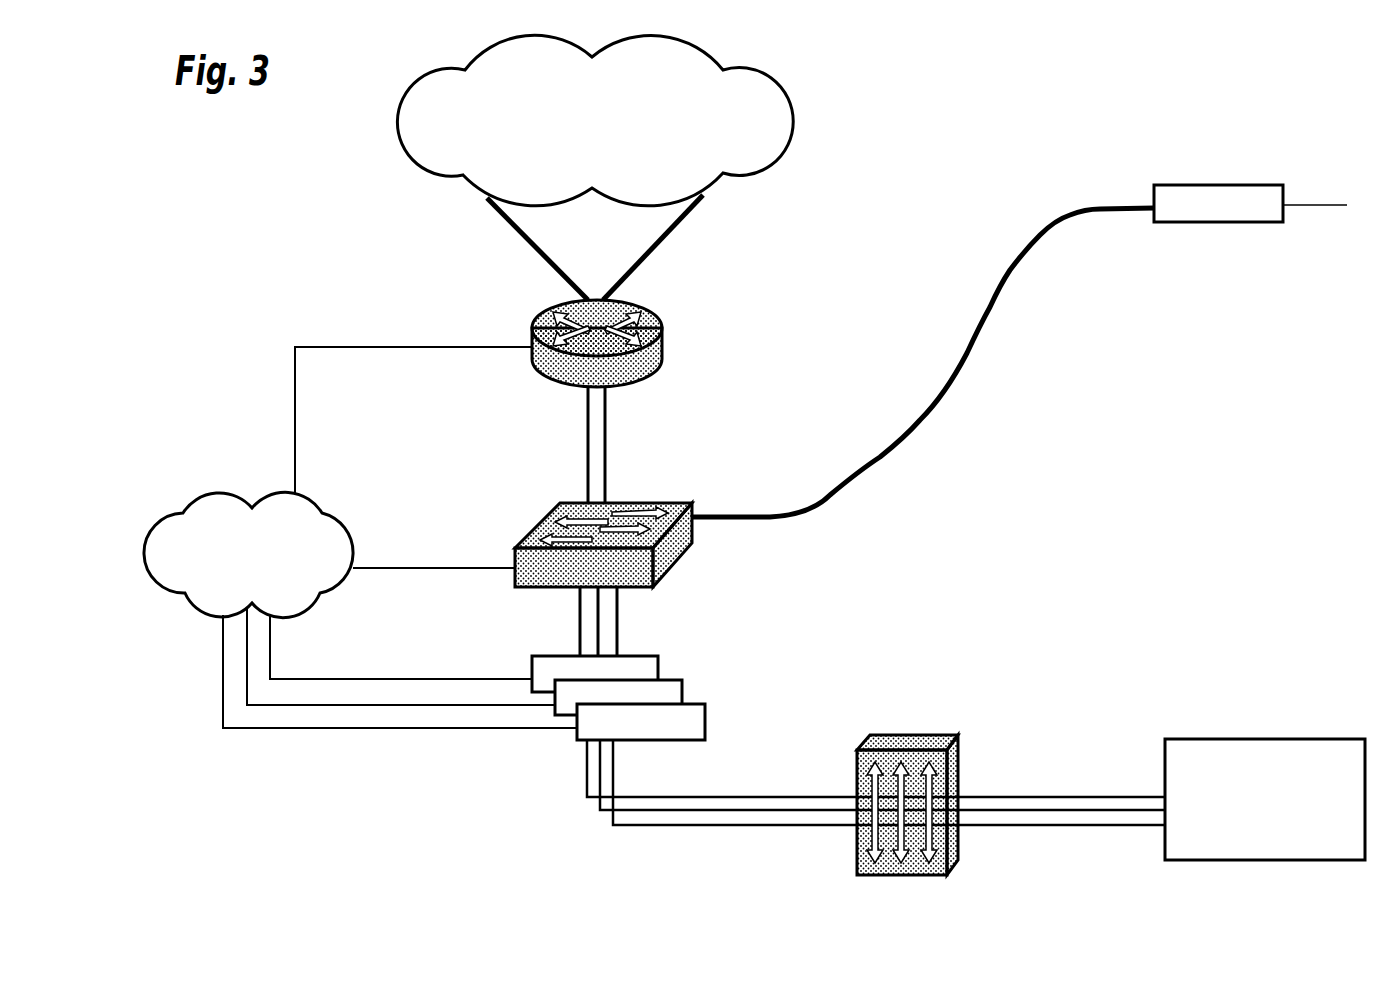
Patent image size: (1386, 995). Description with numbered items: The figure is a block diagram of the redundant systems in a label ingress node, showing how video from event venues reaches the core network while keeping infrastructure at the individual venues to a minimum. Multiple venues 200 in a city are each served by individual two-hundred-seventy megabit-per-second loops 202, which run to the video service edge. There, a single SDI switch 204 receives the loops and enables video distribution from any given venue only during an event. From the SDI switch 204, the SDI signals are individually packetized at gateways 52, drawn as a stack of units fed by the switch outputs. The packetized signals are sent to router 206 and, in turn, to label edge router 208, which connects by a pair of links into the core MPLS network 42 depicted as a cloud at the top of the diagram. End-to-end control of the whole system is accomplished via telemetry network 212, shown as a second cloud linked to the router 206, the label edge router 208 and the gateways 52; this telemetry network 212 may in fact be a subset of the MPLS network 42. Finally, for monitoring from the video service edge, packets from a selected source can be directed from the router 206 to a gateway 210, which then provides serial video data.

The MPLS network 42 is at (792, 106).
The label edge router 208 is at (653, 312).
The router 206 is at (660, 503).
The telemetry network 212 is at (228, 490).
The gateways 52 is at (658, 656).
The 270 Mbps loops 202 is at (977, 793).
The SDI switch 204 is at (958, 745).
The venues 200 is at (1267, 739).
The gateway 210 is at (1204, 185).